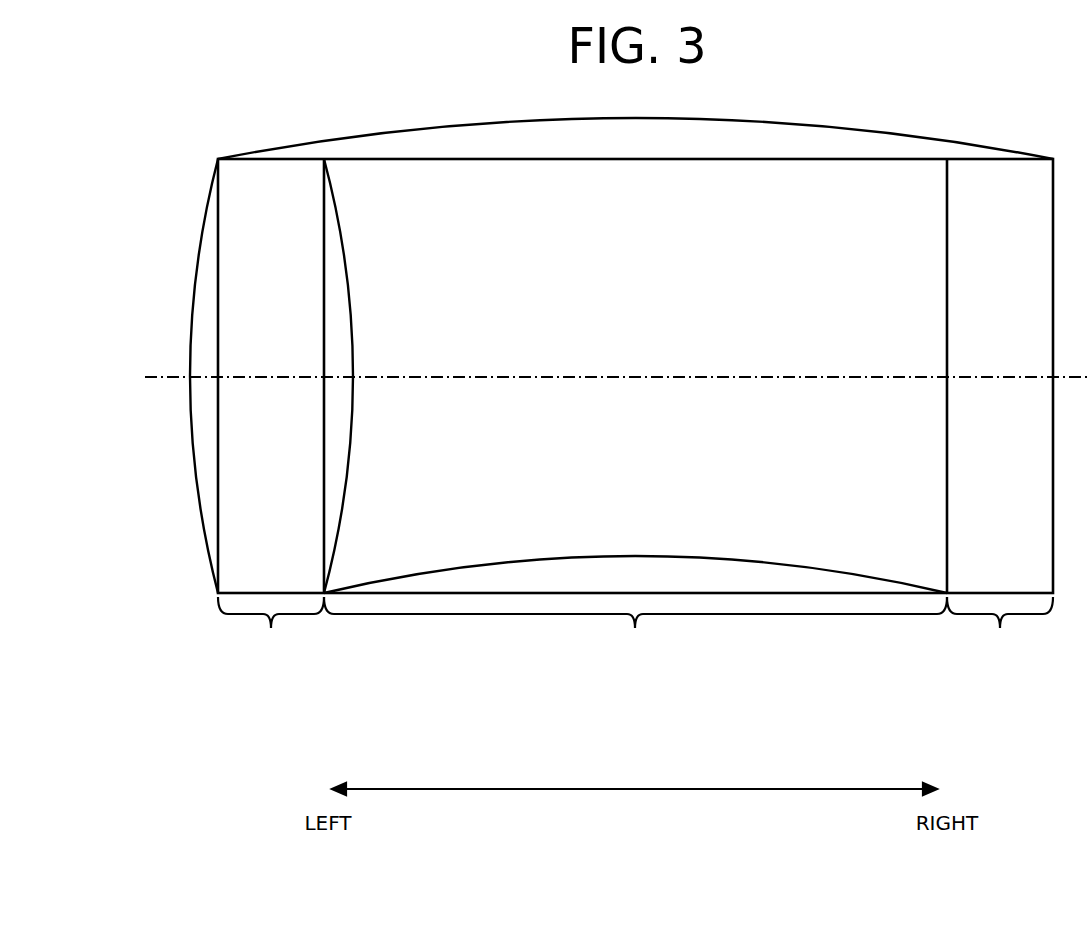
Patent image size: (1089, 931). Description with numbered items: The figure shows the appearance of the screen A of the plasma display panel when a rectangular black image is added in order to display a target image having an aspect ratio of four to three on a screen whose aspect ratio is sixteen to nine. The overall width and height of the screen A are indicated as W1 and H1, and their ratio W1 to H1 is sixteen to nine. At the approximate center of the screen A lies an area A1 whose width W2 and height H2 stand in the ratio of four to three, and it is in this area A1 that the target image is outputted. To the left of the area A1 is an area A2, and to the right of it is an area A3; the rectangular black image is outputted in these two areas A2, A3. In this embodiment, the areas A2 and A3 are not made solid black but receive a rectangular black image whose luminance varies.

The screen A is at (665, 667).
The width of screen W1 is at (635, 132).
The width of area A1 W2 is at (635, 568).
The height of screen H1 is at (196, 376).
The height of area A1 H2 is at (347, 376).
The area A1 is at (635, 628).
The area A2 is at (271, 628).
The area A3 is at (1000, 628).